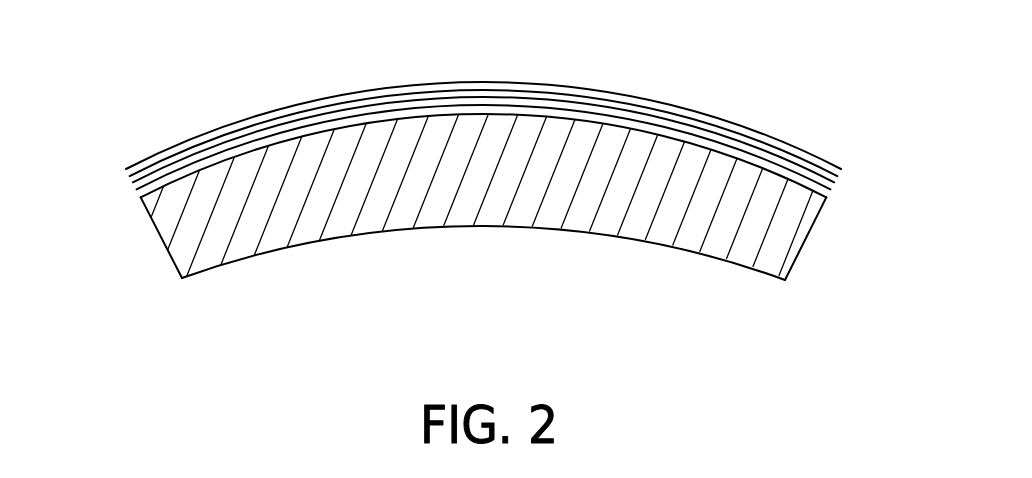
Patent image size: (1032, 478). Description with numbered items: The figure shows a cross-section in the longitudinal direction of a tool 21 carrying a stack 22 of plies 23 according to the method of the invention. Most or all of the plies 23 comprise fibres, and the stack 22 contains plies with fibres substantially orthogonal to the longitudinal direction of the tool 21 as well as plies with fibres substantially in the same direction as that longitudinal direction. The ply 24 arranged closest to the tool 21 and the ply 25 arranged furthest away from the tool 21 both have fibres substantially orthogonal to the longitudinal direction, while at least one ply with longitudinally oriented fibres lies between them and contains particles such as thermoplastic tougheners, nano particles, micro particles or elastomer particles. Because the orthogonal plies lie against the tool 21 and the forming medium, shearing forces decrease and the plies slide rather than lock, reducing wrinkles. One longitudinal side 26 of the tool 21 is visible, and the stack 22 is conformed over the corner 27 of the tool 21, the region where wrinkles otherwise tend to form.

The tool 21 is at (446, 256).
The stack of plies 22 is at (112, 192).
The plies 23 is at (198, 119).
The ply arranged closest to the tool 24 is at (833, 193).
The ply arranged furthest away from the tool 25 is at (842, 172).
The longitudinal side of the tool 26 is at (611, 184).
The corner of the tool 27 is at (226, 170).